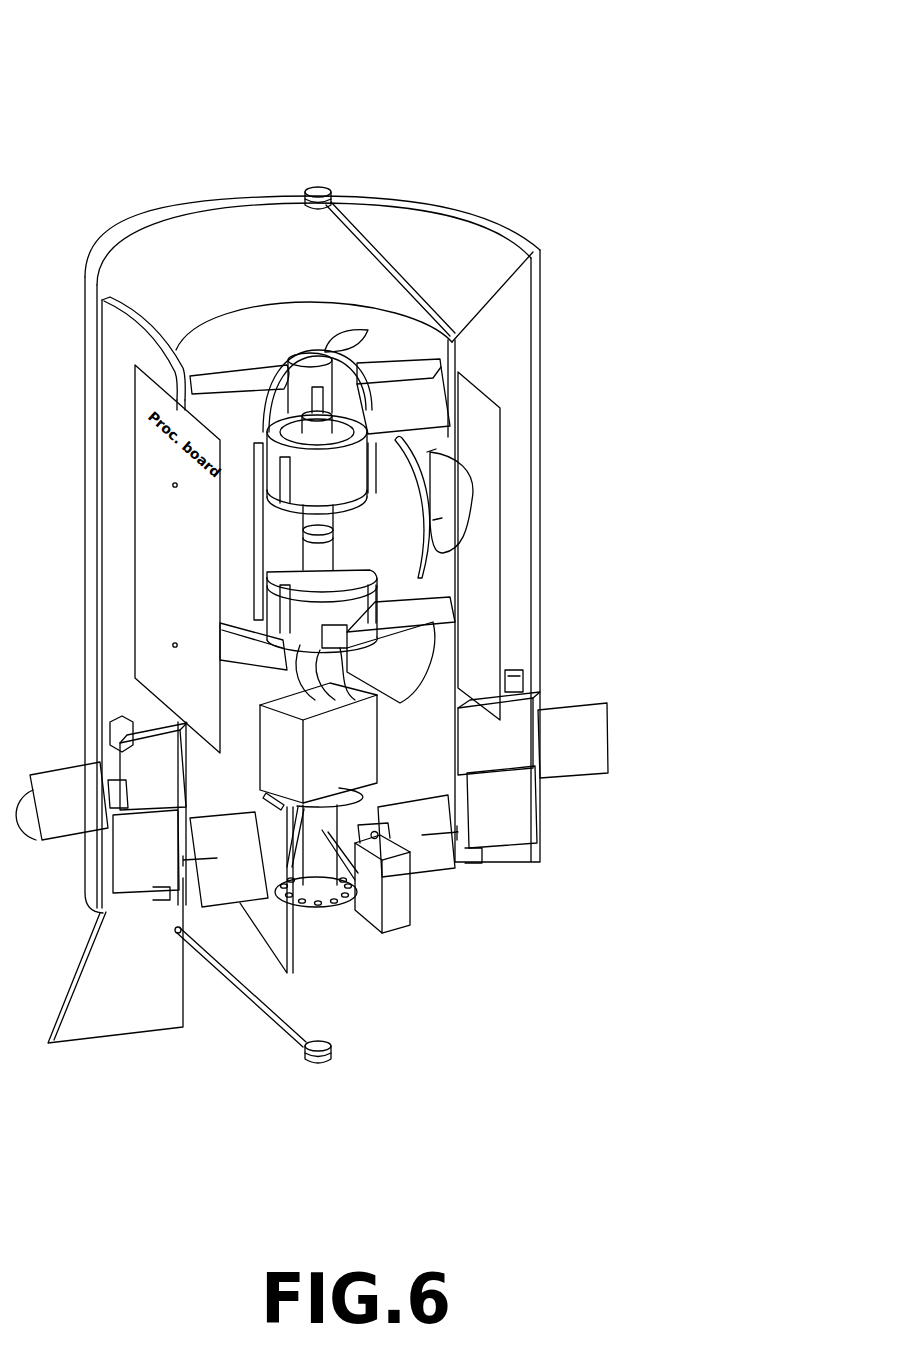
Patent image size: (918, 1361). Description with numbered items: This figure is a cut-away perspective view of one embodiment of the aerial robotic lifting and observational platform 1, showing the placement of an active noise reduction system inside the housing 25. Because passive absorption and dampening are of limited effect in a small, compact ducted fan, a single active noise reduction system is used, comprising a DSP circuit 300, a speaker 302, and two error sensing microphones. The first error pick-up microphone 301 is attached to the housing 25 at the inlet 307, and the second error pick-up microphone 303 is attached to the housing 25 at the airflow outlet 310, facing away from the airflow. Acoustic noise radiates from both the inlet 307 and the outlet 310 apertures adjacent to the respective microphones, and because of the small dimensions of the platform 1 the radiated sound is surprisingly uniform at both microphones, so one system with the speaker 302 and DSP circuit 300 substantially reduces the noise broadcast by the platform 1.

The aerial robotic lifting and observational platform 1 is at (467, 200).
The housing 25 is at (556, 265).
The DSP circuit 300 is at (506, 558).
The first error pick-up microphone 301 is at (318, 164).
The speaker 302 is at (412, 489).
The second error pick-up microphone 303 is at (344, 1079).
The inlet 307 is at (260, 272).
The airflow outlet 310 is at (434, 928).